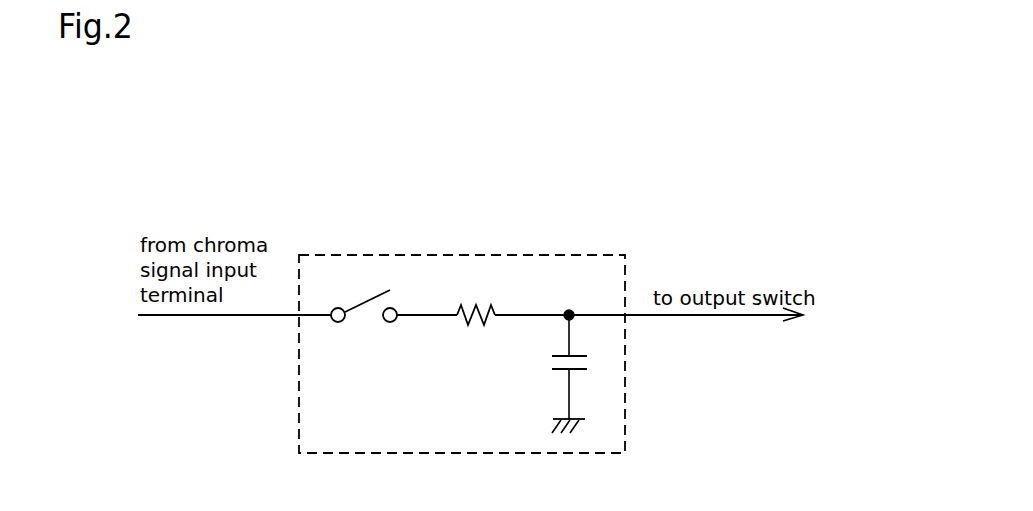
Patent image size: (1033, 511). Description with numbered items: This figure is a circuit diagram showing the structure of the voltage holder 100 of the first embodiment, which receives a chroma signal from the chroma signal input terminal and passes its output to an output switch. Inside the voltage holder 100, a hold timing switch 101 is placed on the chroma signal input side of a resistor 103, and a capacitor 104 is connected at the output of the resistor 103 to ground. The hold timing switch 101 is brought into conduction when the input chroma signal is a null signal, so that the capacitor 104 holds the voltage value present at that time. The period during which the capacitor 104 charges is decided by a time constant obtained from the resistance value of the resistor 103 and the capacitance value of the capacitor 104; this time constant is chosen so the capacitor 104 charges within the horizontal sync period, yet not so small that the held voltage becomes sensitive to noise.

The voltage holder 100 is at (565, 255).
The hold timing switch 101 is at (364, 327).
The resistor 103 is at (470, 328).
The capacitor 104 is at (550, 365).